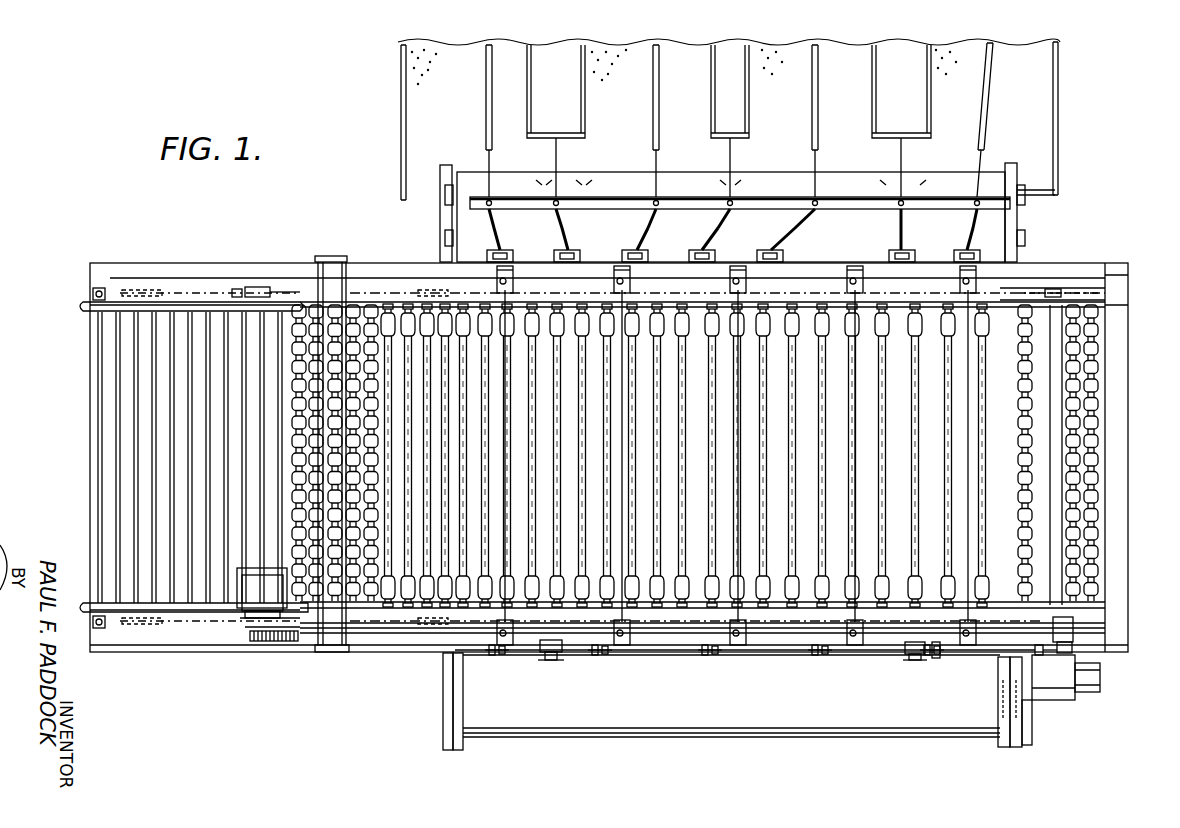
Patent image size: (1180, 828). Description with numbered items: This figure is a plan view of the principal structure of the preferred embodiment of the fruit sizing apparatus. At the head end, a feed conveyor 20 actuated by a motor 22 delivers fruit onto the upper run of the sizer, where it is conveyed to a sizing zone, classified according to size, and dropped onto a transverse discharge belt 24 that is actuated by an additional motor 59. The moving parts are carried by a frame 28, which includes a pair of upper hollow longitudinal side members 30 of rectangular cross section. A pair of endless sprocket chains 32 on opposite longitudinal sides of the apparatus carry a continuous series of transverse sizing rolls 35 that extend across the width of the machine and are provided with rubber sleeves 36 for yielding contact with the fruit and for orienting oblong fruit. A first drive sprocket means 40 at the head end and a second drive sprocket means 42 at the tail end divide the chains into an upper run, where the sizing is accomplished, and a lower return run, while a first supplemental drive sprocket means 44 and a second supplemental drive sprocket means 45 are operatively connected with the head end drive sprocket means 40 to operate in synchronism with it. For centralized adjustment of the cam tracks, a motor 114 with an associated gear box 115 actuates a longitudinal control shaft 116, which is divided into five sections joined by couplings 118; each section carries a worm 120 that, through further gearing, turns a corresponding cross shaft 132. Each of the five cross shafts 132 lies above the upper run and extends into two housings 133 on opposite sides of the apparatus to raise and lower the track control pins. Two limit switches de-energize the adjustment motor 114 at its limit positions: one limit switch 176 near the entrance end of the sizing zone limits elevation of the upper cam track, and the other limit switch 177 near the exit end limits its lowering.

The feed conveyor 20 is at (88, 457).
The motor 22 is at (247, 602).
The transverse discharge belt 24 is at (665, 735).
The frame 28 is at (1130, 536).
The upper hollow longitudinal side members 30 is at (392, 268).
The endless sprocket chains 32 is at (1010, 292).
The transverse sizing rolls 35 is at (368, 478).
The rubber sleeves 36 is at (372, 410).
The first drive sprocket means 40 is at (141, 290).
The second drive sprocket means 42 is at (1092, 292).
The first supplemental drive sprocket means 44 is at (241, 290).
The second supplemental drive sprocket means 45 is at (436, 268).
The motor 59 is at (1062, 692).
The motor 114 is at (1073, 630).
The gear box 115 is at (1073, 648).
The longitudinal control shaft 116 is at (865, 653).
The couplings 118 is at (934, 658).
The worm 120 is at (508, 657).
The cross shafts 132 is at (508, 470).
The housings 133 is at (625, 262).
The limit switch 176 is at (548, 652).
The limit switch 177 is at (915, 655).